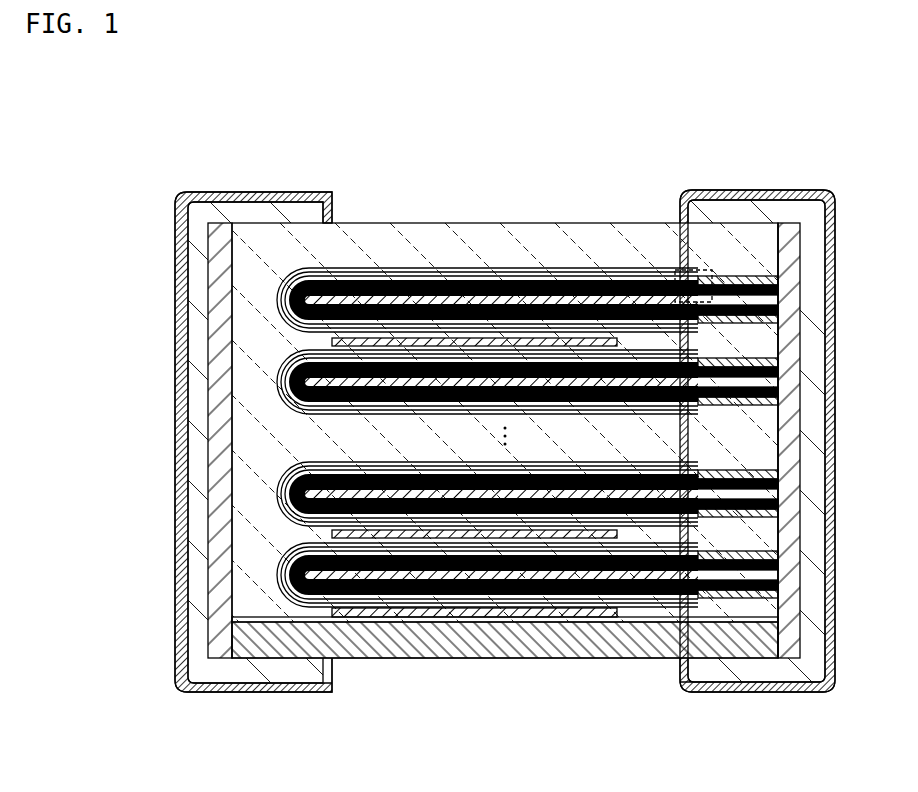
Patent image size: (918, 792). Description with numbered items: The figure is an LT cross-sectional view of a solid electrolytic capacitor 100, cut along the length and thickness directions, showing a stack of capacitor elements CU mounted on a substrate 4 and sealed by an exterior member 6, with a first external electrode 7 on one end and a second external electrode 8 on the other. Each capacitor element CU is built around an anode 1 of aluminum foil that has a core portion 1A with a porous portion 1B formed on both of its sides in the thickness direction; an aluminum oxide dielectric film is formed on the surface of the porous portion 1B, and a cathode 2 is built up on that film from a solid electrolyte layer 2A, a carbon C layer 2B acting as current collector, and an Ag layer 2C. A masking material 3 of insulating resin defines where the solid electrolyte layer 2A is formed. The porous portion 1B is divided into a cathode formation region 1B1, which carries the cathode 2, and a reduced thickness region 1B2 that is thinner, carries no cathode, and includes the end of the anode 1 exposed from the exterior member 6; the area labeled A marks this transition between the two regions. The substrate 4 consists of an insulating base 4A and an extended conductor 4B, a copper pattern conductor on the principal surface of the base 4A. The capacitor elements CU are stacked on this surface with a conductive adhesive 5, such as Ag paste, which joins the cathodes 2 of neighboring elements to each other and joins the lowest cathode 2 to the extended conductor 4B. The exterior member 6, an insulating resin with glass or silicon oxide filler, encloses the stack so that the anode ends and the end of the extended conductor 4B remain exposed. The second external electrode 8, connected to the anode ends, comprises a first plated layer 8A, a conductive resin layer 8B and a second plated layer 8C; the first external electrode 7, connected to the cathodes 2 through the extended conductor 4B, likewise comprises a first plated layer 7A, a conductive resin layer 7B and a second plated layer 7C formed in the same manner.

The solid electrolytic capacitor 100 is at (868, 62).
The capacitor element CU is at (558, 333).
The anode 1 is at (538, 205).
The core portion 1A is at (606, 292).
The porous portion 1B is at (710, 223).
The cathode formation region 1B1 is at (660, 287).
The reduced thickness region 1B2 is at (718, 298).
The cathode 2 is at (487, 209).
The solid electrolyte layer 2A is at (403, 123).
The C layer 2B is at (518, 272).
The Ag layer 2C is at (462, 268).
The masking material 3 is at (777, 243).
The substrate 4 is at (505, 704).
The base 4A is at (362, 658).
The extended conductor 4B is at (415, 622).
The conductive adhesive 5 is at (332, 342).
The exterior member 6 is at (385, 250).
The first external electrode 7 is at (231, 414).
The first plated layer 7A is at (187, 192).
The conductive resin layer 7B is at (238, 192).
The second plated layer 7C is at (250, 391).
The second external electrode 8 is at (781, 491).
The first plated layer 8A is at (812, 665).
The conductive resin layer 8B is at (760, 673).
The second plated layer 8C is at (746, 489).
The region A is at (694, 273).